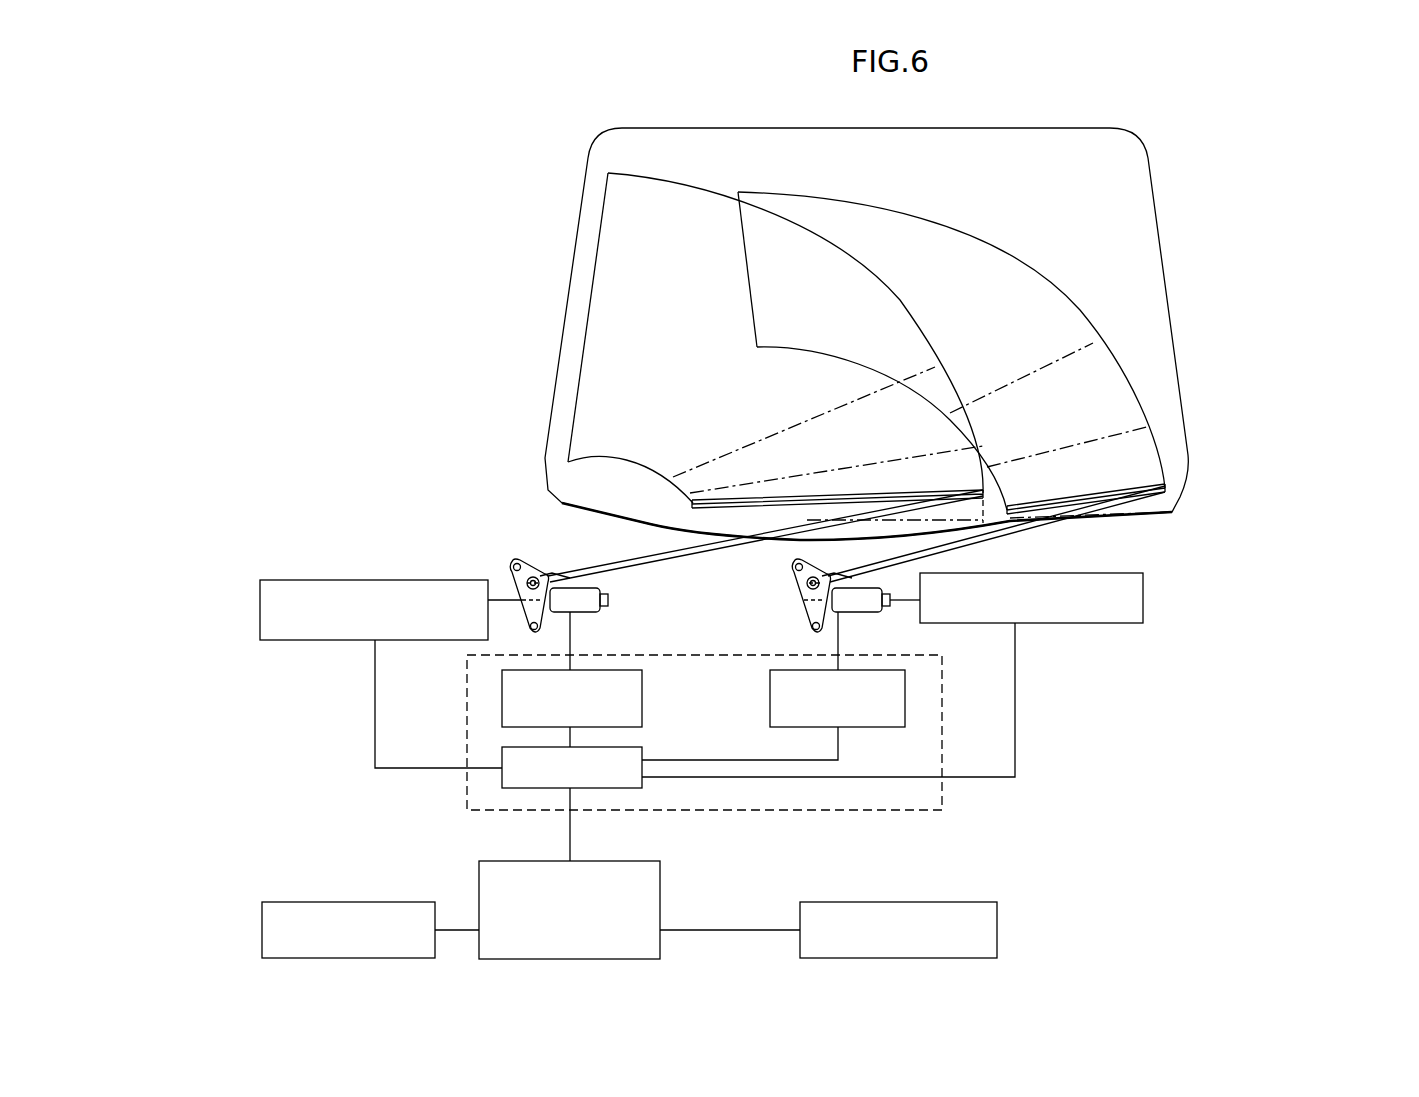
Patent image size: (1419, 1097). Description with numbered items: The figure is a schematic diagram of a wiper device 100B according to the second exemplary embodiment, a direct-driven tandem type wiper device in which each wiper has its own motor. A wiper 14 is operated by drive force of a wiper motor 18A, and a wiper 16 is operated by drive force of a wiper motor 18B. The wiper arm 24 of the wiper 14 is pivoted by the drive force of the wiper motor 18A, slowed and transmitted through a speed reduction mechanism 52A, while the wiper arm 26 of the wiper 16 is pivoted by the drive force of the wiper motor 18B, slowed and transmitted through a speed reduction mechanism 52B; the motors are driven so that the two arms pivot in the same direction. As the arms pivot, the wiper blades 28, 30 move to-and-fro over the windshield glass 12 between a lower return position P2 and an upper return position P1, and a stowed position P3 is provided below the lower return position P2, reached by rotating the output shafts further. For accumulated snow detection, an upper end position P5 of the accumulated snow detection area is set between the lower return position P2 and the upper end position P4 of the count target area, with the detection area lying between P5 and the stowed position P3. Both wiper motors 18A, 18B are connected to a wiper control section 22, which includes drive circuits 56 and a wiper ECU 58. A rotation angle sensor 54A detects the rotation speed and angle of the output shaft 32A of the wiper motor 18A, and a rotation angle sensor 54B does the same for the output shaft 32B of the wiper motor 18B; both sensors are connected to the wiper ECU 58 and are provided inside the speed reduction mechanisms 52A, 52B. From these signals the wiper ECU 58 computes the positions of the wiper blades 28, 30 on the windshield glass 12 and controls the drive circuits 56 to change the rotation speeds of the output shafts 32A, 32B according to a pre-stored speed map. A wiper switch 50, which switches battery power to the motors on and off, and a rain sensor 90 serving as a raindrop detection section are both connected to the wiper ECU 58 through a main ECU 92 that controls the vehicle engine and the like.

The windshield glass 12 is at (852, 132).
The wiper device 100B is at (1232, 146).
The wiper 14 is at (906, 548).
The wiper 16 is at (649, 545).
The wiper arm 24 is at (990, 535).
The wiper arm 26 is at (702, 548).
The wiper blade 28 is at (1108, 498).
The wiper blade 30 is at (873, 490).
The output shaft 32A is at (796, 575).
The output shaft 32B is at (515, 558).
The speed reduction mechanism 52A is at (800, 585).
The speed reduction mechanism 52B is at (542, 566).
The wiper motor 18A is at (862, 612).
The wiper motor 18B is at (603, 612).
The rotation angle sensor 54A is at (1145, 600).
The rotation angle sensor 54B is at (345, 580).
The wiper control section 22 is at (485, 815).
The drive circuit 56 is at (502, 686).
The wiper ECU 58 is at (502, 752).
The main ECU 92 is at (662, 884).
The rain sensor 90 is at (262, 930).
The wiper switch 50 is at (997, 930).
The upper return position P1 is at (600, 172).
The lower return position P2 is at (748, 508).
The stowed position P3 is at (832, 520).
The upper end position of the count target area P4 is at (792, 425).
The upper end position of the accumulated snow detection area P5 is at (850, 467).